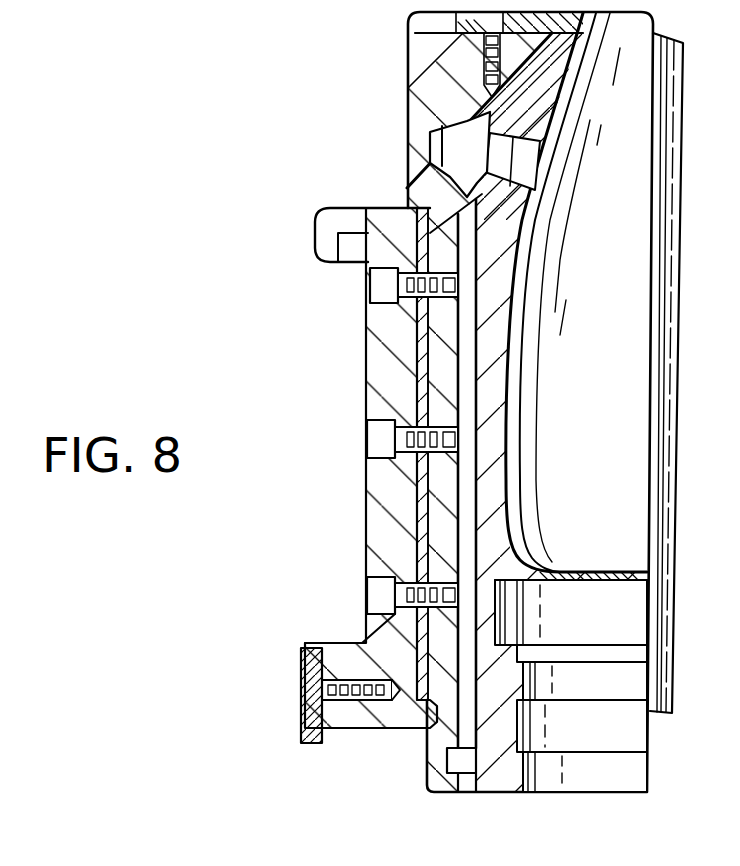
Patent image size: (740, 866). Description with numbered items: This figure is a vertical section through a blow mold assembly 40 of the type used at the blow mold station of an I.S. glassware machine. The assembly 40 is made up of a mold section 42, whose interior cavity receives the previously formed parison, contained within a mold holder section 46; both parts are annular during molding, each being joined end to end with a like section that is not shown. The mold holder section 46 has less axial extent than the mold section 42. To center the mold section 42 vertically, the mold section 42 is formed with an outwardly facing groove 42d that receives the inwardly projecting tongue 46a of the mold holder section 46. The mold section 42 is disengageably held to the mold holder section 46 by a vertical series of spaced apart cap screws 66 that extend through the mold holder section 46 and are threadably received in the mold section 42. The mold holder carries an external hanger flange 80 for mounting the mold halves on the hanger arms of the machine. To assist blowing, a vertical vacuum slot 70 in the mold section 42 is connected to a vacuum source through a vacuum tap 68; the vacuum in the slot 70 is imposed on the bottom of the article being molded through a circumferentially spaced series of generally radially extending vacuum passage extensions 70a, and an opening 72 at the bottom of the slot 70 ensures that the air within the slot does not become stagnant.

The assembly 40 is at (358, 103).
The mold section 42 is at (525, 238).
The outwardly facing groove 42d is at (438, 722).
The mold holder section 46 is at (378, 494).
The tongue 46a is at (410, 733).
The cap screws 66 is at (388, 277).
The vacuum tap 68 is at (432, 146).
The vacuum slot 70 is at (470, 513).
The vacuum passage extensions 70a is at (513, 539).
The openings 72 is at (458, 776).
The external hanger flange 80 is at (316, 236).